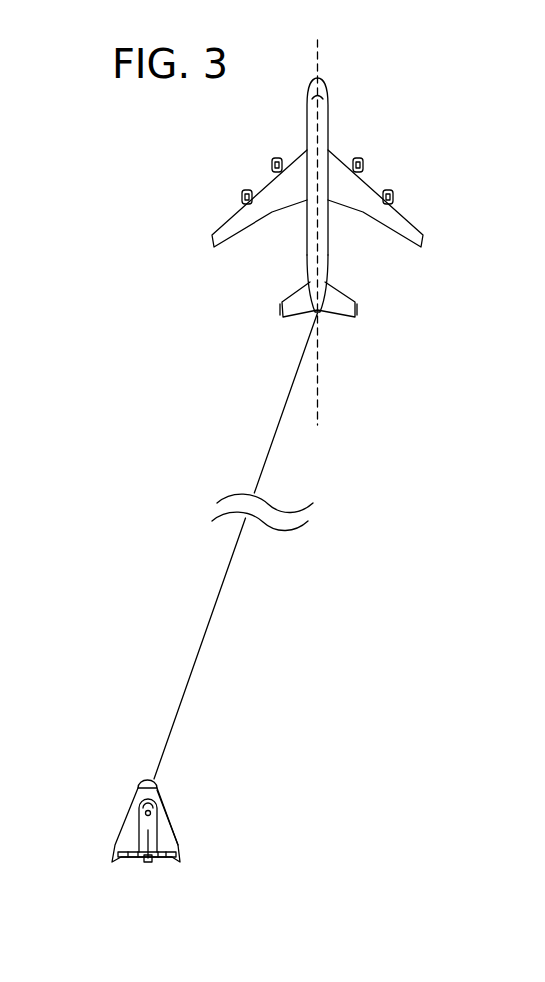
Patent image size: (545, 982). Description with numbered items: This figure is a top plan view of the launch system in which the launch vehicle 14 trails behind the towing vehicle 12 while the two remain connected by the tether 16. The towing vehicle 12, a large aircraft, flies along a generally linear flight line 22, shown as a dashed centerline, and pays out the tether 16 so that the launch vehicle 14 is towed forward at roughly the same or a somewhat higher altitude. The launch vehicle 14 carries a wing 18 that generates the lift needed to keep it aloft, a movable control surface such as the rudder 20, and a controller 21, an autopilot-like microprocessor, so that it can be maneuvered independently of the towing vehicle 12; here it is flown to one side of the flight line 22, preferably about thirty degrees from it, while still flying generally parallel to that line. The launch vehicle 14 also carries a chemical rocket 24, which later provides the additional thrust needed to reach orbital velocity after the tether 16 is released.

The towing vehicle 12 is at (327, 128).
The launch vehicle 14 is at (193, 824).
The tether 16 is at (198, 659).
The wing 18 is at (165, 837).
The rudder 20 is at (137, 848).
The controller 21 is at (145, 780).
The flight line 22 is at (325, 368).
The chemical rocket 24 is at (154, 871).